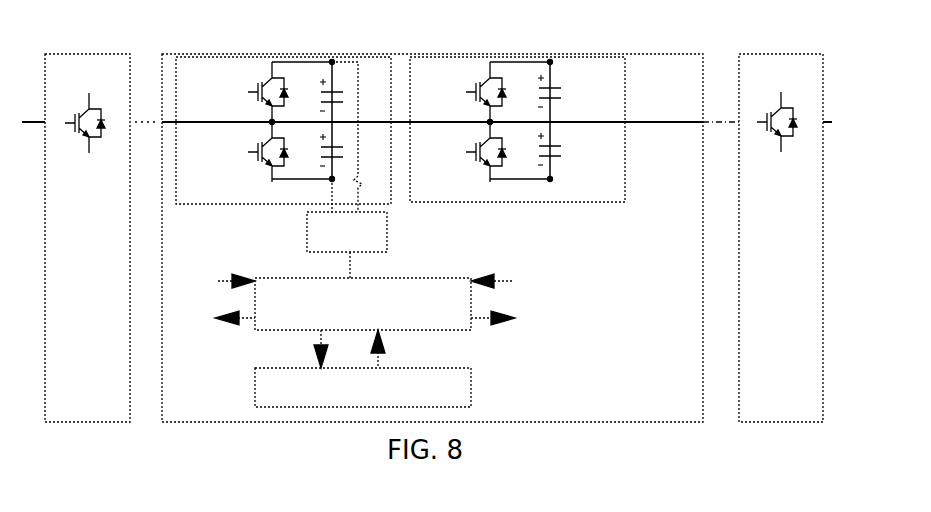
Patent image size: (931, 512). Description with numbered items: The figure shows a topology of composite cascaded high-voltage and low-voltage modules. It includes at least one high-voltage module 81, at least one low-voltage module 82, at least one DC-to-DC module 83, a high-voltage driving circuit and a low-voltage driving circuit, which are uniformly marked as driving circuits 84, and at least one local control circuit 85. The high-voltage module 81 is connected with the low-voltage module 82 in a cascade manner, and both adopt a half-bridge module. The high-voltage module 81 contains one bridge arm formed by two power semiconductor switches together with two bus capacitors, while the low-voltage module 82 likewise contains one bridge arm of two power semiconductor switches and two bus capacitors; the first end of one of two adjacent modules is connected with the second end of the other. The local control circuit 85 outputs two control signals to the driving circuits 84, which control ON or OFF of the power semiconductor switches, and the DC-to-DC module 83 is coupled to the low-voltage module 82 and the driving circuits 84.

The high-voltage module 81 is at (560, 53).
The low-voltage module 82 is at (261, 53).
The DC-to-DC module 83 is at (389, 228).
The high-voltage driving circuit and low-voltage driving circuit 84 is at (436, 277).
The local control circuit 85 is at (473, 390).